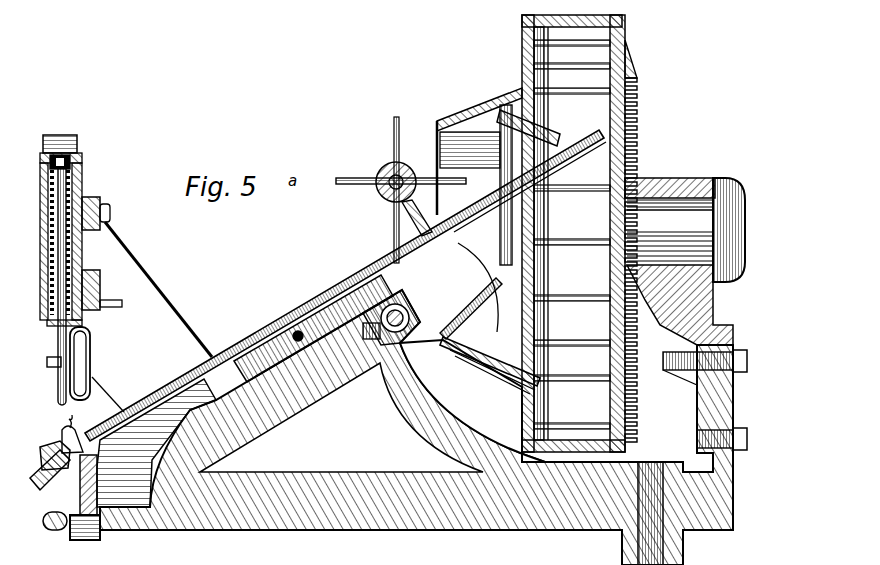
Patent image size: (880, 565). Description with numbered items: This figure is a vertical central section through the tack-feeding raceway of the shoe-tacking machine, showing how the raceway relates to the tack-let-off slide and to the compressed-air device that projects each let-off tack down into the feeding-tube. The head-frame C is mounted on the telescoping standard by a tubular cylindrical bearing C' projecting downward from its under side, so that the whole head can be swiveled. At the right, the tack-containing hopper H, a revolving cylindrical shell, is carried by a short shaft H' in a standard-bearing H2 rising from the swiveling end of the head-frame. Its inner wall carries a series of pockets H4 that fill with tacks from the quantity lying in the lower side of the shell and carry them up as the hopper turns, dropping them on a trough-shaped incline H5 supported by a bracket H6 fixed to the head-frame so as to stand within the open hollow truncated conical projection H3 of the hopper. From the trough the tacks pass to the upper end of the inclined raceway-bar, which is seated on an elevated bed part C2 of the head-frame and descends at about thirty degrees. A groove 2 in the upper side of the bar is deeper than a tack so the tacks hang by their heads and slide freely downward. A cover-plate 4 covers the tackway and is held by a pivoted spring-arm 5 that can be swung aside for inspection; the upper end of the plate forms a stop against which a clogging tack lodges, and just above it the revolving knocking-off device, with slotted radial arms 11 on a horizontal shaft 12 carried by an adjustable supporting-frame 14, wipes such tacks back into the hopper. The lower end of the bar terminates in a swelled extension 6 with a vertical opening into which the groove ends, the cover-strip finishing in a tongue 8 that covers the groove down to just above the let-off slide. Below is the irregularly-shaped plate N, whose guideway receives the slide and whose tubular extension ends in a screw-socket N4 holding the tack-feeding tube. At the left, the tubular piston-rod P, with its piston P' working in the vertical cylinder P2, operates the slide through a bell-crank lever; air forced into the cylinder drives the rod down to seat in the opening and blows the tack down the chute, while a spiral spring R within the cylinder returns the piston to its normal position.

The head-frame C is at (388, 427).
The tubular cylindrical bearing C' is at (669, 513).
The elevated bed part C2 is at (189, 439).
The groove 2 is at (346, 292).
The cover-plate 4 is at (172, 404).
The spring-arm 5 is at (176, 289).
The swelled extension 6 is at (50, 451).
The tongue 8 is at (72, 434).
The radial arms 11 is at (401, 190).
The horizontal shaft 12 is at (392, 186).
The supporting-frame 14 is at (380, 338).
The irregularly-shaped plate N is at (40, 480).
The screw-socket N4 is at (85, 535).
The piston-rod P is at (76, 273).
The piston P' is at (96, 191).
The cylinder P2 is at (67, 270).
The spiral spring R is at (40, 282).
The tack-containing hopper H is at (490, 222).
The short shaft H' is at (685, 241).
The standard-bearing H2 is at (712, 326).
The hollow truncated conical projection H3 is at (479, 151).
The pockets H4 is at (573, 233).
The trough-shaped incline H5 is at (528, 128).
The bracket H6 is at (485, 218).